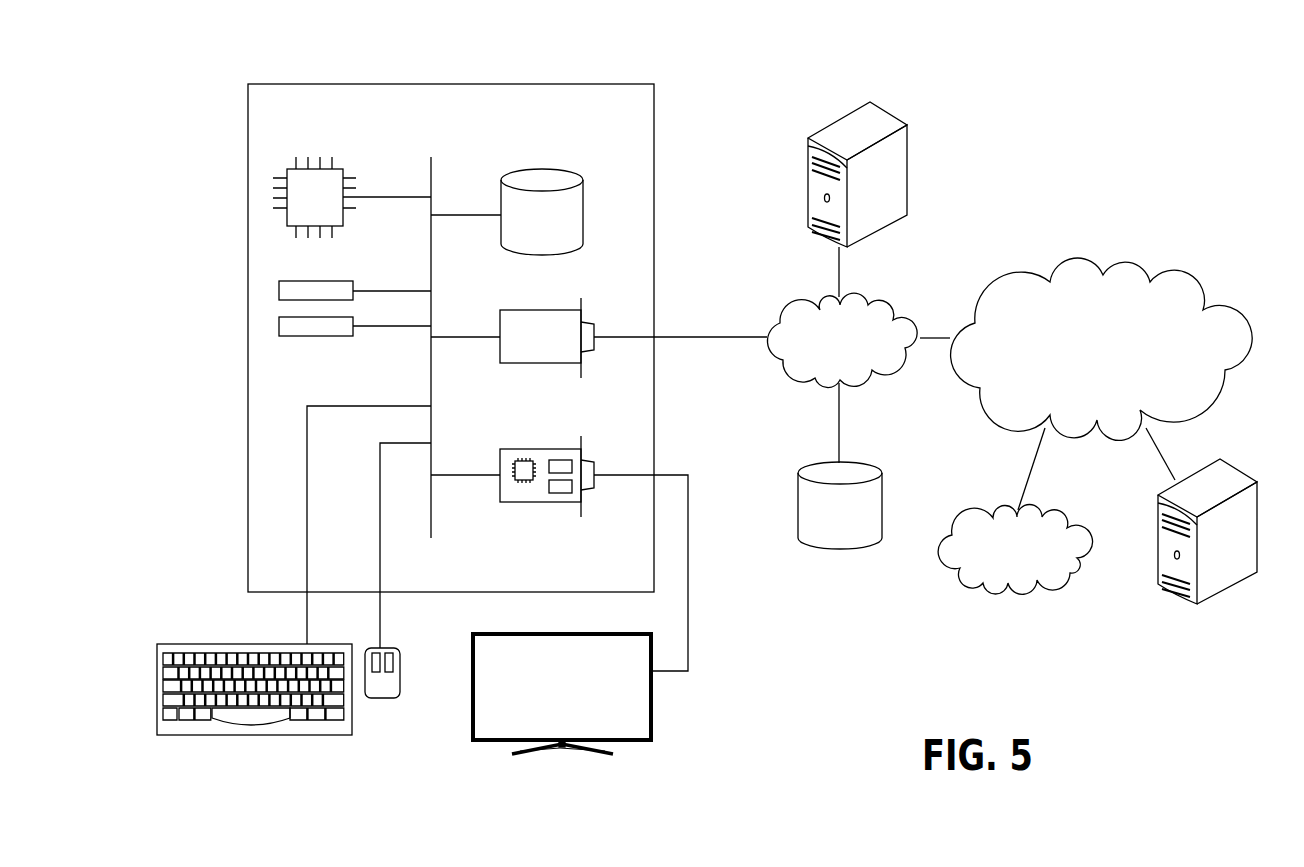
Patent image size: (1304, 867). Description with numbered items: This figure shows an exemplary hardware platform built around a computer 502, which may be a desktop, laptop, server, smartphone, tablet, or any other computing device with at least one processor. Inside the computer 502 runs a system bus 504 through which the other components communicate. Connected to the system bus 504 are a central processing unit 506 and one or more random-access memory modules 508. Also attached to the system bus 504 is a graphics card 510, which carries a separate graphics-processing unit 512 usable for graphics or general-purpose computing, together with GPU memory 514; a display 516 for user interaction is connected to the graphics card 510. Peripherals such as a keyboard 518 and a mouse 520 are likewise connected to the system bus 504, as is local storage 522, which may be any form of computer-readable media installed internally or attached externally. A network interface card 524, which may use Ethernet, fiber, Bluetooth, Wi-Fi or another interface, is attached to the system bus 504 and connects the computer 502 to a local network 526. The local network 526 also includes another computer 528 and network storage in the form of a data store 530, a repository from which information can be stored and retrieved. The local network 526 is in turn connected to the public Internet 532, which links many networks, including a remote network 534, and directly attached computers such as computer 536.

The computer 502 is at (610, 84).
The system bus 504 is at (432, 168).
The central processing unit (CPU) 506 is at (338, 168).
The random-access memory (RAM) modules 508 is at (353, 321).
The graphics card 510 is at (559, 539).
The graphics-processing unit (GPU) 512 is at (521, 482).
The GPU memory 514 is at (557, 495).
The display 516 is at (653, 723).
The keyboard 518 is at (258, 737).
The mouse 520 is at (380, 700).
The local storage 522 is at (586, 198).
The network interface card (NIC) 524 is at (500, 318).
The local network 526 is at (893, 298).
The computer 528 is at (893, 112).
The data store 530 is at (873, 463).
The public Internet 532 is at (1143, 260).
The remote network 534 is at (1066, 508).
The computer 536 is at (1233, 466).